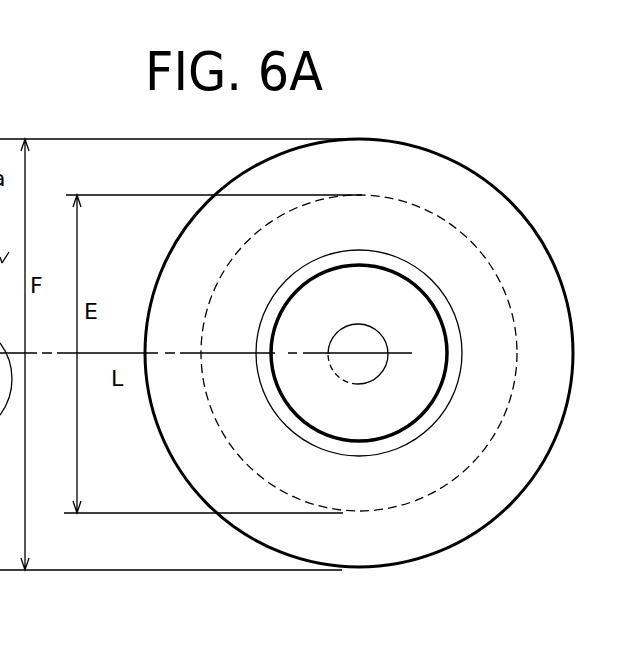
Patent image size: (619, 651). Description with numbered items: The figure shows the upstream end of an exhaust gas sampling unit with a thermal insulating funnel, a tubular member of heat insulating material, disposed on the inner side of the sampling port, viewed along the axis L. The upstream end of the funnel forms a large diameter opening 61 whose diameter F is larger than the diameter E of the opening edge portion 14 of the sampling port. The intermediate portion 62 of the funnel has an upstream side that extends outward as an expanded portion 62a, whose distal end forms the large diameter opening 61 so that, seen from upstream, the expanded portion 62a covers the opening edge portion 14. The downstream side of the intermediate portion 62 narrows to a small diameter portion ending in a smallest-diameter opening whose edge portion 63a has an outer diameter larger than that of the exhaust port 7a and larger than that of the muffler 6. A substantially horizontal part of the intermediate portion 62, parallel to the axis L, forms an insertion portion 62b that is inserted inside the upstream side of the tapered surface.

The muffler 6 is at (348, 442).
The exhaust port 7a is at (380, 368).
The opening edge portion 14 is at (477, 460).
The large diameter opening 61 is at (150, 297).
The intermediate portion 62 is at (508, 250).
The expanded portion 62a is at (477, 188).
The insertion portion 62b is at (393, 220).
The edge portion of the opening 63a is at (272, 337).